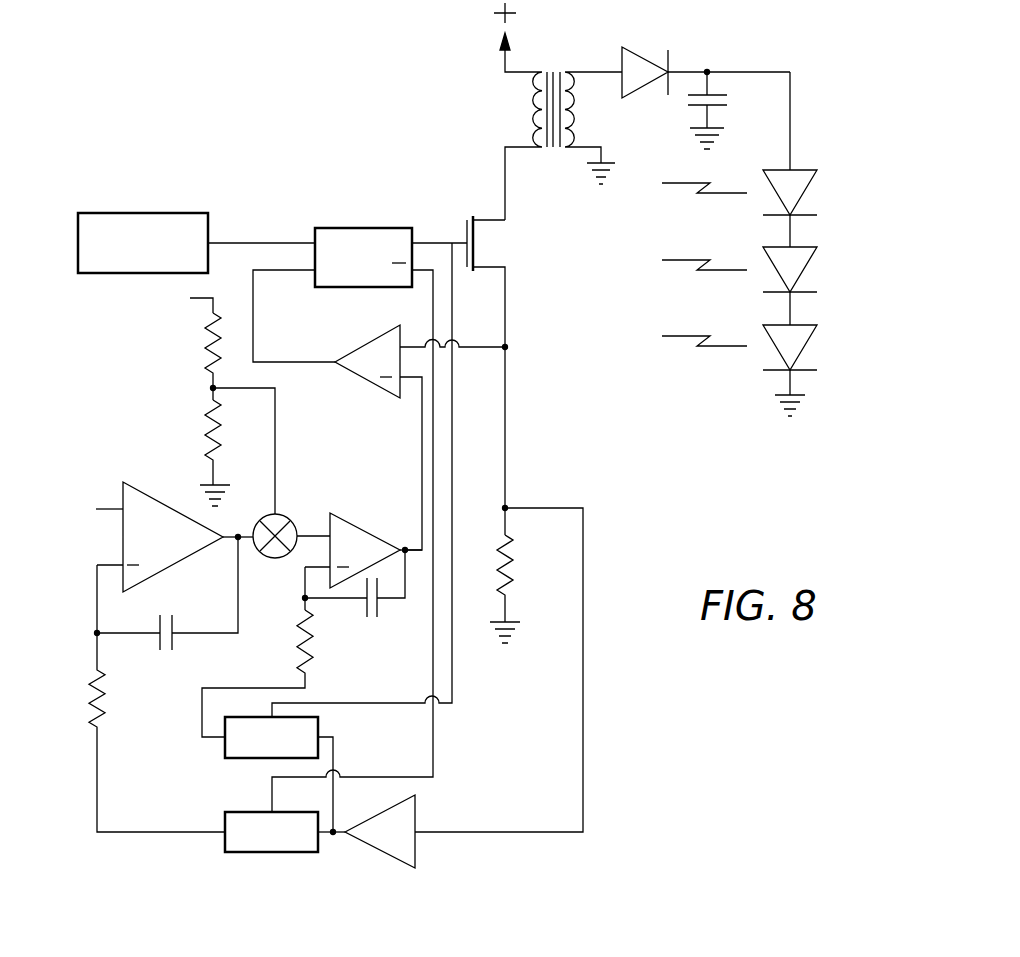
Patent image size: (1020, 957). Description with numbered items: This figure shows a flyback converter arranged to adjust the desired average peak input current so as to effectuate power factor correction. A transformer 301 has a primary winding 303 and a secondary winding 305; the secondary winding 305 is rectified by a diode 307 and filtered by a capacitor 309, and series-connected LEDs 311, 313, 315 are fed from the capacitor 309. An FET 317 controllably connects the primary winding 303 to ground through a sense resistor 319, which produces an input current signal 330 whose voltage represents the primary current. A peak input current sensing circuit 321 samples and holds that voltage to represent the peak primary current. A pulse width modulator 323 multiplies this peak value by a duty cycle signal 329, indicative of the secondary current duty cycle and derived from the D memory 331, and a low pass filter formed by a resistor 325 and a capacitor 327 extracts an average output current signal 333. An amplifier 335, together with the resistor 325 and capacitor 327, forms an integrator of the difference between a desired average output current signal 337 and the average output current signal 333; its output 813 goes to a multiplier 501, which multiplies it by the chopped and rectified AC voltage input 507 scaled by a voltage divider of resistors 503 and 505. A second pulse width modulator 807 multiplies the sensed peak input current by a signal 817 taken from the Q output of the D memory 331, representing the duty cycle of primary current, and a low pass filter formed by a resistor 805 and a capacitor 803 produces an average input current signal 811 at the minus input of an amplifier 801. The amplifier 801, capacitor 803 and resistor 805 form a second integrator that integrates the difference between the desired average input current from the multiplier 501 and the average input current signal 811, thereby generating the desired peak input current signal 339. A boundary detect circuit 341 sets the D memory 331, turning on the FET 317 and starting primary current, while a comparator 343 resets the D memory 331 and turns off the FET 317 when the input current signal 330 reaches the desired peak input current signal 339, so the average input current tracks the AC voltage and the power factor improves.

The transformer 301 is at (553, 72).
The primary winding 303 is at (522, 108).
The secondary winding 305 is at (590, 108).
The diode 307 is at (647, 52).
The capacitor 309 is at (728, 98).
The LED 311 is at (793, 170).
The LED 313 is at (800, 247).
The LED 315 is at (803, 325).
The FET 317 is at (495, 237).
The sense resistor 319 is at (515, 570).
The peak input current sensing circuit 321 is at (418, 820).
The pulse width modulator 323 is at (240, 855).
The resistor 325 is at (90, 697).
The capacitor 327 is at (172, 622).
The duty cycle signal 329 is at (432, 648).
The input current signal 330 is at (505, 488).
The D memory 331 is at (338, 228).
The average output current signal 333 is at (97, 598).
The amplifier 335 is at (137, 487).
The desired average output current signal 337 is at (108, 508).
The desired peak input current signal 339 is at (320, 532).
The boundary detect circuit 341 is at (107, 213).
The comparator 343 is at (358, 347).
The multiplier 501 is at (273, 560).
The resistor 503 is at (207, 428).
The resistor 505 is at (207, 340).
The chopped and rectified AC voltage input 507 is at (162, 305).
The amplifier 801 is at (380, 537).
The capacitor 803 is at (372, 617).
The resistor 805 is at (297, 658).
The second pulse width modulator 807 is at (245, 760).
The average input current signal 811 is at (303, 600).
The amplifier output node 813 is at (230, 540).
The output line 817 is at (452, 652).